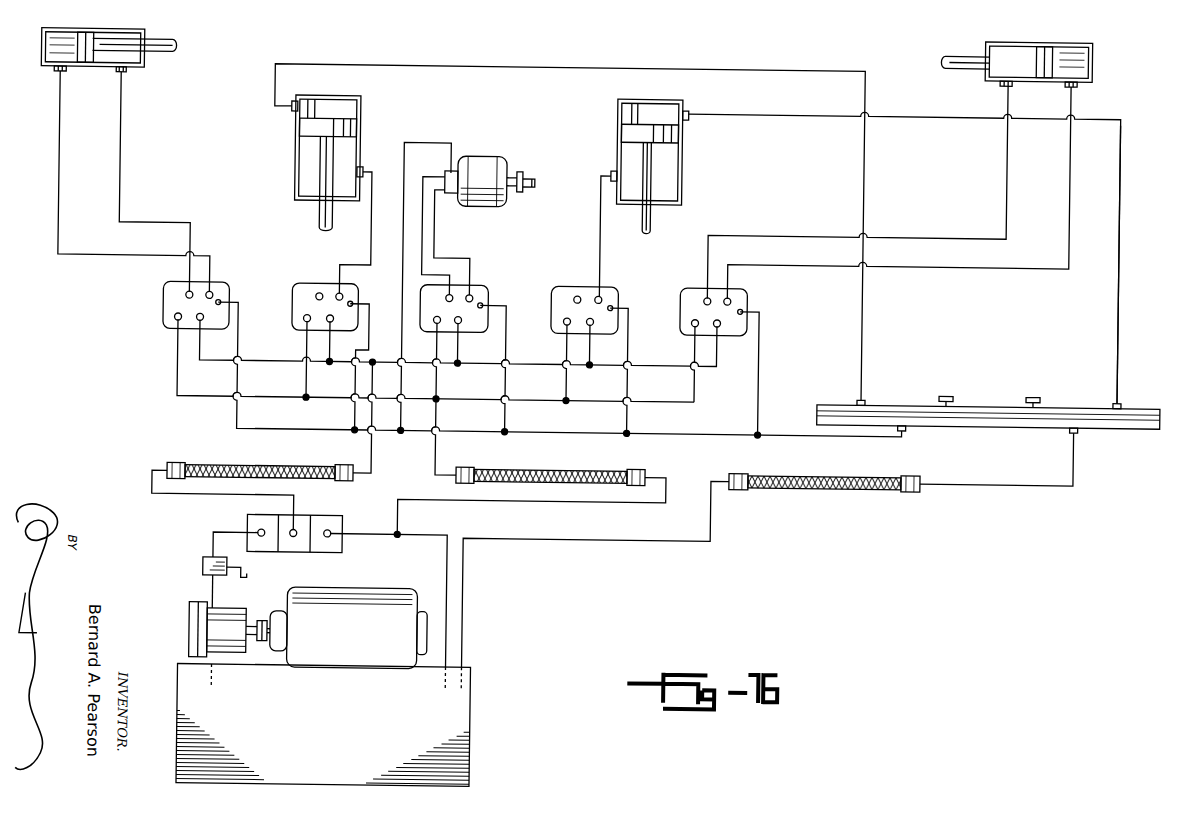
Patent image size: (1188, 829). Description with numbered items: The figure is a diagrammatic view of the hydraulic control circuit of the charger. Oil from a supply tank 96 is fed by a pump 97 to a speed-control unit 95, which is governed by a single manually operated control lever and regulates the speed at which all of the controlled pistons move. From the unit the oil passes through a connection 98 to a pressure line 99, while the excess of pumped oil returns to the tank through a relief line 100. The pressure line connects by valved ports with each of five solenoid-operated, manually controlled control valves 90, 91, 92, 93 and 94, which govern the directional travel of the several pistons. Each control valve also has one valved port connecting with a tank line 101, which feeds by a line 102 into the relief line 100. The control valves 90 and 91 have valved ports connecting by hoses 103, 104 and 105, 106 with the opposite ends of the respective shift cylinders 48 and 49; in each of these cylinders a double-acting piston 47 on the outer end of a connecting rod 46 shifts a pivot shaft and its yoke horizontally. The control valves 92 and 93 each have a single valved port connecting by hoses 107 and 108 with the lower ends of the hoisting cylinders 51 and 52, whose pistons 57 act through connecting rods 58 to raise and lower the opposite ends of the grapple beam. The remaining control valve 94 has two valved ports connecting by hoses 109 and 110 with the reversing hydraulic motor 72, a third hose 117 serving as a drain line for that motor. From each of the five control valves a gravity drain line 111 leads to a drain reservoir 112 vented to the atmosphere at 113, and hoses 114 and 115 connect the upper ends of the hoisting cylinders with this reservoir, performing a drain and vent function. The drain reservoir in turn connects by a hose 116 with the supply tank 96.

The connecting rod 46 is at (162, 50).
The double-acting piston 47 is at (92, 77).
The oil cylinder 48 is at (40, 73).
The oil cylinder 49 is at (984, 78).
The hoisting cylinder 51 is at (292, 188).
The hoisting cylinder 52 is at (680, 172).
The piston 57 is at (352, 130).
The connecting rod 58 is at (317, 225).
The reversing hydraulic motor 72 is at (482, 158).
The control valve 90 is at (155, 314).
The control valve 91 is at (755, 299).
The control valve 92 is at (290, 292).
The control valve 93 is at (577, 282).
The control valve 94 is at (495, 290).
The speed-control unit 95 is at (325, 520).
The supply tank 96 is at (181, 691).
The pump 97 is at (192, 632).
The connection 98 is at (305, 473).
The pressure line 99 is at (535, 363).
The relief line 100 is at (430, 540).
The tank line 101 is at (535, 404).
The line 102 is at (574, 468).
The flexible hose 103 is at (56, 183).
The flexible hose 104 is at (117, 190).
The flexible hose 105 is at (1067, 190).
The flexible hose 106 is at (1004, 188).
The flexible hose 107 is at (369, 247).
The flexible hose 108 is at (598, 253).
The flexible hose 109 is at (432, 236).
The flexible hose 110 is at (428, 223).
The drain line 111 is at (651, 438).
The reservoir 112 is at (820, 402).
The vent 113 is at (943, 391).
The hose 114 is at (861, 330).
The hose 115 is at (1117, 326).
The hose 116 is at (848, 488).
The flexible hose 117 is at (428, 145).